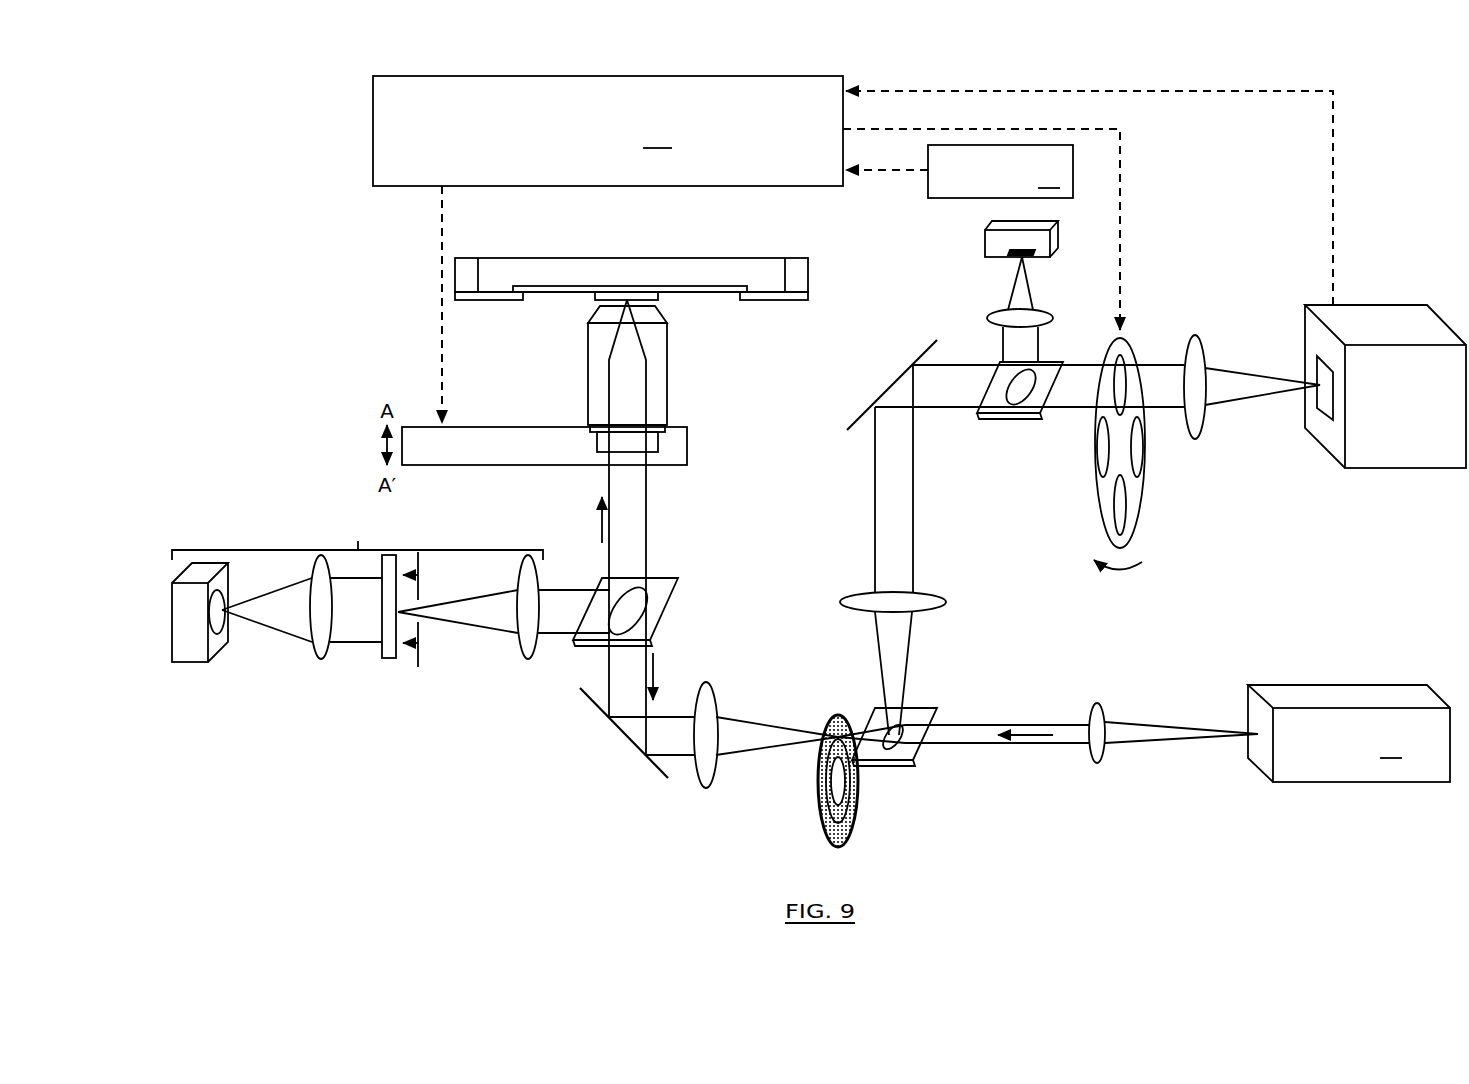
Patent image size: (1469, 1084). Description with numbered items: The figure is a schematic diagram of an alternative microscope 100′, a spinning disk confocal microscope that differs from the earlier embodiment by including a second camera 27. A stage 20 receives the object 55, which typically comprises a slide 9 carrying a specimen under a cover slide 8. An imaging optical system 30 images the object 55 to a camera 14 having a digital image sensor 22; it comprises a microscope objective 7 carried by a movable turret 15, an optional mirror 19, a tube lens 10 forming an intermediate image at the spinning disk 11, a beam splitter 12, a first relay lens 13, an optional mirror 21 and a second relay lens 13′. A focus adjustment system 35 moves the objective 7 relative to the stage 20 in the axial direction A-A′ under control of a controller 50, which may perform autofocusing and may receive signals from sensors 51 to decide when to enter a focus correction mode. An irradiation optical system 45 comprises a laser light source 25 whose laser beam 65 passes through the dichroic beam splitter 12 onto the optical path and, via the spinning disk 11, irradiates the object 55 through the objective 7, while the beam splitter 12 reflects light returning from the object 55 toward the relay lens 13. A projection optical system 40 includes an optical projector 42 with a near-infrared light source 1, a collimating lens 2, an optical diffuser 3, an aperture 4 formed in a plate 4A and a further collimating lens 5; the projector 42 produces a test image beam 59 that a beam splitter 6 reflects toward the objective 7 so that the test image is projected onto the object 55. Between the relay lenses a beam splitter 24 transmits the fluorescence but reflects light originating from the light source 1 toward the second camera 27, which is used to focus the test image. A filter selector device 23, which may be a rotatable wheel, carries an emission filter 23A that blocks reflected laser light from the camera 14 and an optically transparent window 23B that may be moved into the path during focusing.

The microscope 100′ is at (235, 287).
The controller 50 is at (608, 131).
The sensors 51 is at (1000, 171).
The focus adjustment system 35 is at (372, 152).
The stage 20 is at (690, 258).
The cover slide 8 is at (657, 297).
The slide 9 is at (735, 298).
The object 55 is at (586, 301).
The microscope objective 7 is at (588, 385).
The movable support structure 15 is at (688, 445).
The imaging optical system 30 is at (650, 778).
The optical projector 42 is at (357, 535).
The projection optical system 40 is at (247, 700).
The light source 1 is at (176, 645).
The collimating lens 2 is at (318, 662).
The optical diffuser 3 is at (386, 660).
The aperture 4 is at (422, 623).
The plate 4A is at (418, 668).
The collimating lens 5 is at (523, 660).
The test image beam 59 is at (557, 638).
The beam splitter 6 is at (660, 585).
The mirror 19 is at (592, 703).
The tube lens 10 is at (710, 782).
The spinning disk 11 is at (860, 823).
The beam splitter 12 is at (897, 765).
The laser beam 65 is at (980, 735).
The irradiation optical system 45 is at (1047, 787).
The light source 25 is at (1349, 733).
The first image plane relay lens 13 is at (945, 603).
The mirror 21 is at (930, 340).
The beam splitter 24 is at (1020, 415).
The second camera 27 is at (985, 240).
The filter selector device 23 is at (1097, 503).
The emission filter 23A is at (1117, 390).
The optically transparent window 23B is at (1140, 450).
The second image plane relay lens 13′ is at (1200, 338).
The camera 14 is at (1387, 325).
The image sensor 22 is at (1318, 410).